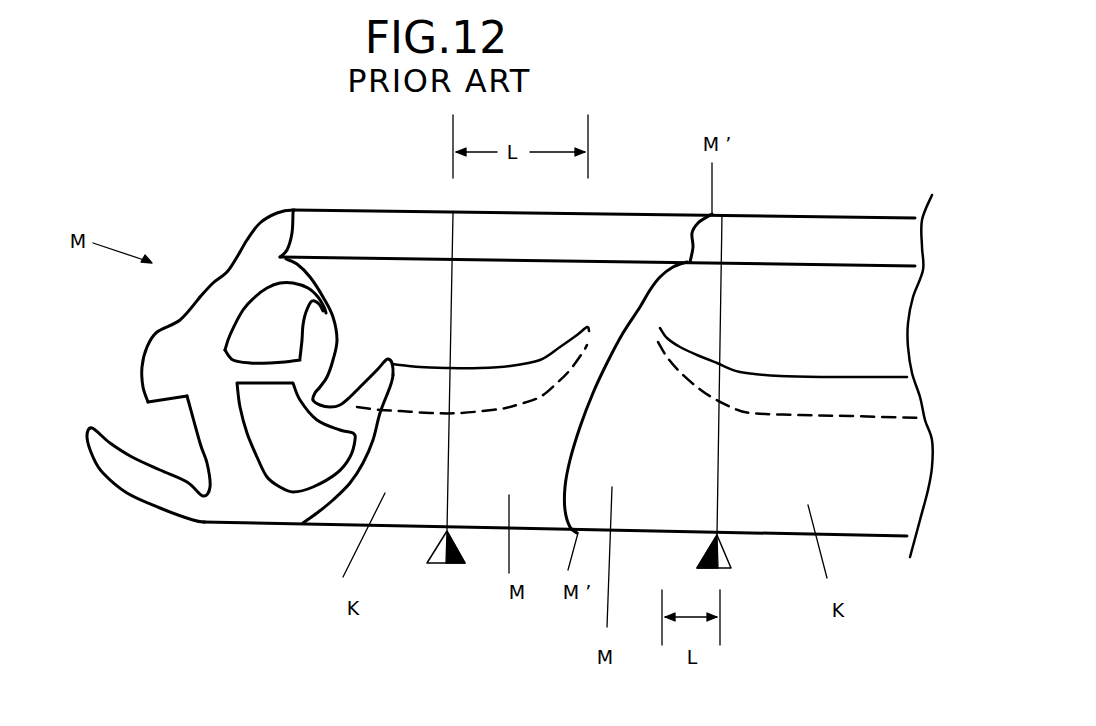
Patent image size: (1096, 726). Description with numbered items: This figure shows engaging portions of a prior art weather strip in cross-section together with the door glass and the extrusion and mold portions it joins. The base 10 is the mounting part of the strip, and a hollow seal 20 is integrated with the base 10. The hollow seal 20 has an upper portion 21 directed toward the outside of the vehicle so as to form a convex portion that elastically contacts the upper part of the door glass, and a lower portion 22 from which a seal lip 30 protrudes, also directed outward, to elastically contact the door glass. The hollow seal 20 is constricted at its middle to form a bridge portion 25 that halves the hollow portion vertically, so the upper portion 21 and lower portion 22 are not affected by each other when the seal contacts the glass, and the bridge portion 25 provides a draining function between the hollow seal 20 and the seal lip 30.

The base 10 is at (245, 272).
The hollow seal 20 is at (300, 360).
The upper portion 21 is at (263, 322).
The lower portion 22 is at (300, 460).
The bridge portion 25 is at (263, 375).
The seal lip 30 is at (382, 383).